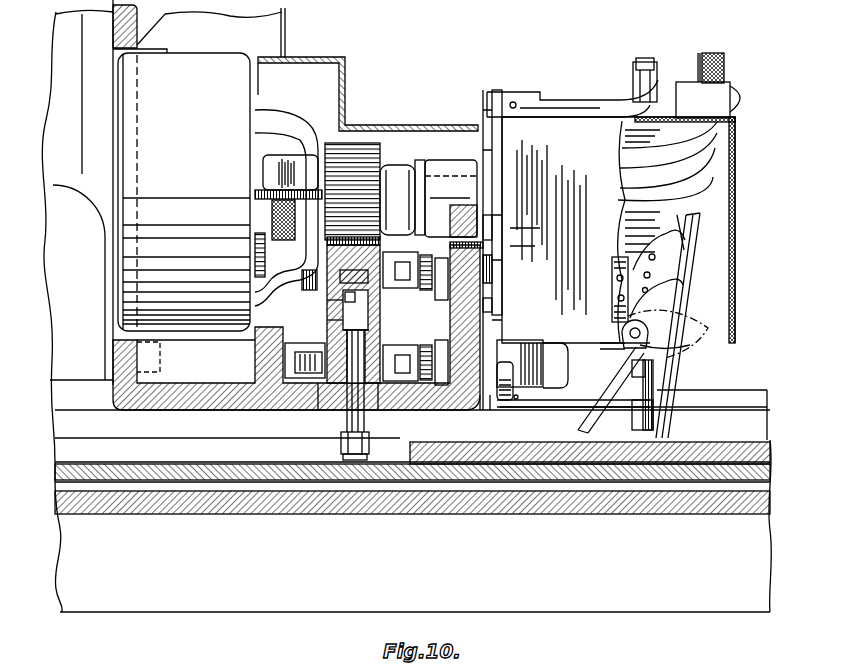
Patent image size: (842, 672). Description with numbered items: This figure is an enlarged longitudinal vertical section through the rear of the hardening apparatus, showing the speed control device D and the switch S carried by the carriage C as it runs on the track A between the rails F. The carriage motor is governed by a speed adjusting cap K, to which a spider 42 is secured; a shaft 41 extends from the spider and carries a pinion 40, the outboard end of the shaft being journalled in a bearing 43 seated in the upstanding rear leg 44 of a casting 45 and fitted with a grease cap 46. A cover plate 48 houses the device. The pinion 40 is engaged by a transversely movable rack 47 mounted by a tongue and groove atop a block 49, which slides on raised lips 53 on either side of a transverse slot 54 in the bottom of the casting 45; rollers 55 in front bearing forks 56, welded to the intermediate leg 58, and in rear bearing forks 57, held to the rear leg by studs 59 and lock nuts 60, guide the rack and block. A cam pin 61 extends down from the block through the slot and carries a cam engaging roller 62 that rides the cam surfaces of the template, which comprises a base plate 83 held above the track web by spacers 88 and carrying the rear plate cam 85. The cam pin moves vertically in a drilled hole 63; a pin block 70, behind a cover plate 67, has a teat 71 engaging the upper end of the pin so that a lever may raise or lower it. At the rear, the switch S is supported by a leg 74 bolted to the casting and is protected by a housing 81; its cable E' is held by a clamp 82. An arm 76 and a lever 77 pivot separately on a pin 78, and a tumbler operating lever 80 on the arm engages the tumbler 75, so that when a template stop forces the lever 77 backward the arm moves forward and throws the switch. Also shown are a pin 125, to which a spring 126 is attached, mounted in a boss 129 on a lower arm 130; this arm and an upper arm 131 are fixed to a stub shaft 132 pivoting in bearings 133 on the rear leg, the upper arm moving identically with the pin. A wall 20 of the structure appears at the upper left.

The casting wall 20 is at (252, 29).
The speed control device D is at (331, 45).
The carriage C is at (70, 392).
The speed adjusting cap K is at (196, 169).
The casting 45 is at (200, 411).
The intermediate upstanding leg 58 is at (257, 369).
The front bearing forks 56 is at (270, 346).
The spider 42 is at (294, 124).
The pinion 40 is at (360, 143).
The rack 47 is at (376, 232).
The shaft 41 is at (418, 165).
The bearing 43 is at (432, 160).
The cover plate 48 is at (400, 124).
The rollers 55 is at (378, 256).
The pin block 70 is at (366, 321).
The cover plate 67 is at (370, 337).
The drilled hole 63 is at (328, 354).
The block 49 is at (325, 310).
The teat 71 is at (330, 318).
The rear bearing forks 57 is at (398, 282).
The studs 59 is at (427, 291).
The lock nuts 60 is at (440, 300).
The rear leg 44 is at (495, 303).
The cam engaging roller 62 is at (348, 462).
The transverse slot 54 is at (341, 440).
The cam pin 61 is at (369, 444).
The raised lips 53 is at (318, 396).
The supporting leg 74 is at (490, 396).
The switch S is at (744, 186).
The housing 81 is at (735, 252).
The grease cap 46 is at (502, 168).
The cable E' is at (692, 148).
The upper arm 131 is at (573, 100).
The stub shaft 132 is at (510, 90).
The clamp 82 is at (732, 100).
The bearings 133 is at (500, 234).
The lower arm 130 is at (575, 398).
The rails F is at (735, 393).
The track A is at (204, 622).
The base plate 83 is at (248, 472).
The rear speed regulating plate cam 85 is at (478, 456).
The spacers 88 is at (568, 490).
The arm 76 is at (690, 247).
The lever 77 is at (665, 298).
The tumbler 75 is at (614, 272).
The tumbler operating lever 80 is at (617, 296).
The pin 78 is at (630, 333).
The boss 129 is at (640, 402).
The spring 126 is at (648, 376).
The pin 125 is at (655, 420).